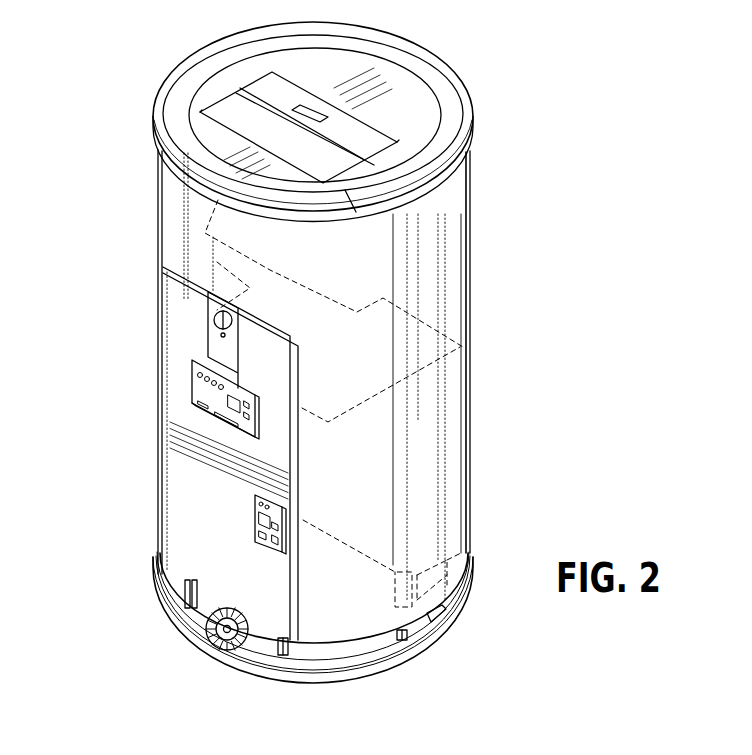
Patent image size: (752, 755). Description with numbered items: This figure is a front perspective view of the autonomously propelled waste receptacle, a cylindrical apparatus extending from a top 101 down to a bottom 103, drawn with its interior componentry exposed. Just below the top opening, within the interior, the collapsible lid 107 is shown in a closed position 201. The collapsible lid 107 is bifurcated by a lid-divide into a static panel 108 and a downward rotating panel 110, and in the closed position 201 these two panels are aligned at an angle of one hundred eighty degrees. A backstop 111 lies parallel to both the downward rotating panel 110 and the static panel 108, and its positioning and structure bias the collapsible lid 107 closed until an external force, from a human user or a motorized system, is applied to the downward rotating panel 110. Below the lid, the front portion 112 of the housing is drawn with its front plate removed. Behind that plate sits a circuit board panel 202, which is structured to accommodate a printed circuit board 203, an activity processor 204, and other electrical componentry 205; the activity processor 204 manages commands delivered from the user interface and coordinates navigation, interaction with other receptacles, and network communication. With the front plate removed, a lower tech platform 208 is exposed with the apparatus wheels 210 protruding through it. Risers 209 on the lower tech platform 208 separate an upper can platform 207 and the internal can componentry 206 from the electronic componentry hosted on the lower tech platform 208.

The top 101 is at (430, 123).
The bottom 103 is at (440, 71).
The collapsible lid 107 is at (223, 112).
The static panel 108 is at (292, 92).
The downward rotating panel 110 is at (247, 130).
The backstop 111 is at (325, 107).
The front portion 112 is at (173, 242).
The closed position 201 is at (240, 97).
The circuit board panel 202 is at (177, 517).
The printed circuit board 203 is at (195, 400).
The activity processor 204 is at (220, 353).
The other electrical componentry 205 is at (286, 517).
The internal can componentry 206 is at (413, 290).
The upper can platform 207 is at (443, 617).
The lower tech platform 208 is at (375, 650).
The risers 209 is at (185, 607).
The apparatus wheels 210 is at (240, 640).